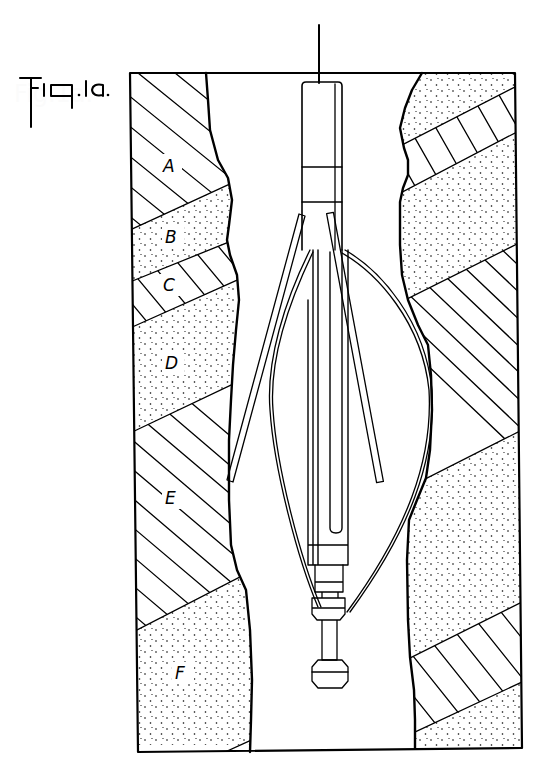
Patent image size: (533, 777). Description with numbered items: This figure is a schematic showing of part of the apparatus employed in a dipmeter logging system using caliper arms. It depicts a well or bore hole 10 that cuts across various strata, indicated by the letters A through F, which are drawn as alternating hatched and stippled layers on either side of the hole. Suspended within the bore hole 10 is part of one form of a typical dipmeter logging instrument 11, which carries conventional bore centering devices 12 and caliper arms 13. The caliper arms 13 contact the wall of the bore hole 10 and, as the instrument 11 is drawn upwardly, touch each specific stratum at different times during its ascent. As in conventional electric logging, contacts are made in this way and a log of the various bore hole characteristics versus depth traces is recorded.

The well or bore hole 10 is at (234, 198).
The dipmeter logging instrument 11 is at (313, 128).
The bore centering devices 12 is at (362, 263).
The caliper arms 13 is at (285, 286).